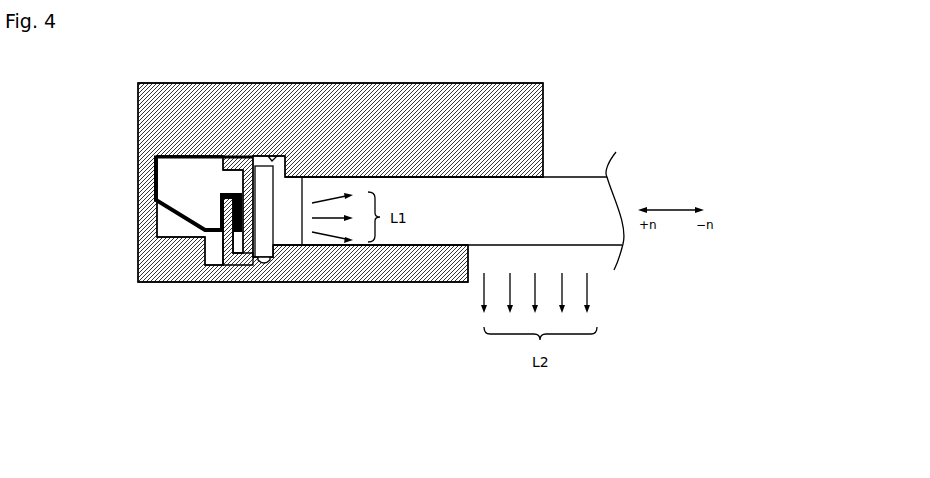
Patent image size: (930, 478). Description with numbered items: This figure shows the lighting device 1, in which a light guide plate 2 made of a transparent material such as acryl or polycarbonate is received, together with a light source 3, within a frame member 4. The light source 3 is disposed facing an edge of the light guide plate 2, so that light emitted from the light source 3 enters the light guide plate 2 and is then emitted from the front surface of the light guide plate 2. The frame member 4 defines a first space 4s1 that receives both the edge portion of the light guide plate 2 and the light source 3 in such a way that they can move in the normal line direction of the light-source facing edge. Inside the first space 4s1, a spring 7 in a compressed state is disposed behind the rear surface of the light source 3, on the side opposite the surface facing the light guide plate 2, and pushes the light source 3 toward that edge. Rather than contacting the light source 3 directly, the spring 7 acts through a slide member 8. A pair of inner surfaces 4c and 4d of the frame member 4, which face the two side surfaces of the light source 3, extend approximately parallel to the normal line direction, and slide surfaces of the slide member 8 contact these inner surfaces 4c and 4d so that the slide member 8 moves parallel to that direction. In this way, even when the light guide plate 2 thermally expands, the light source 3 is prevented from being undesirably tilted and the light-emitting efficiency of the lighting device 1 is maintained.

The lighting device 1 is at (130, 297).
The light guide plate 2 is at (509, 227).
The light source 3 is at (278, 236).
The frame member 4 is at (517, 84).
The inner surface 4c is at (262, 263).
The inner surface 4d is at (275, 157).
The first space 4s1 is at (207, 192).
The spring 7 is at (168, 207).
The slide member 8 is at (245, 267).